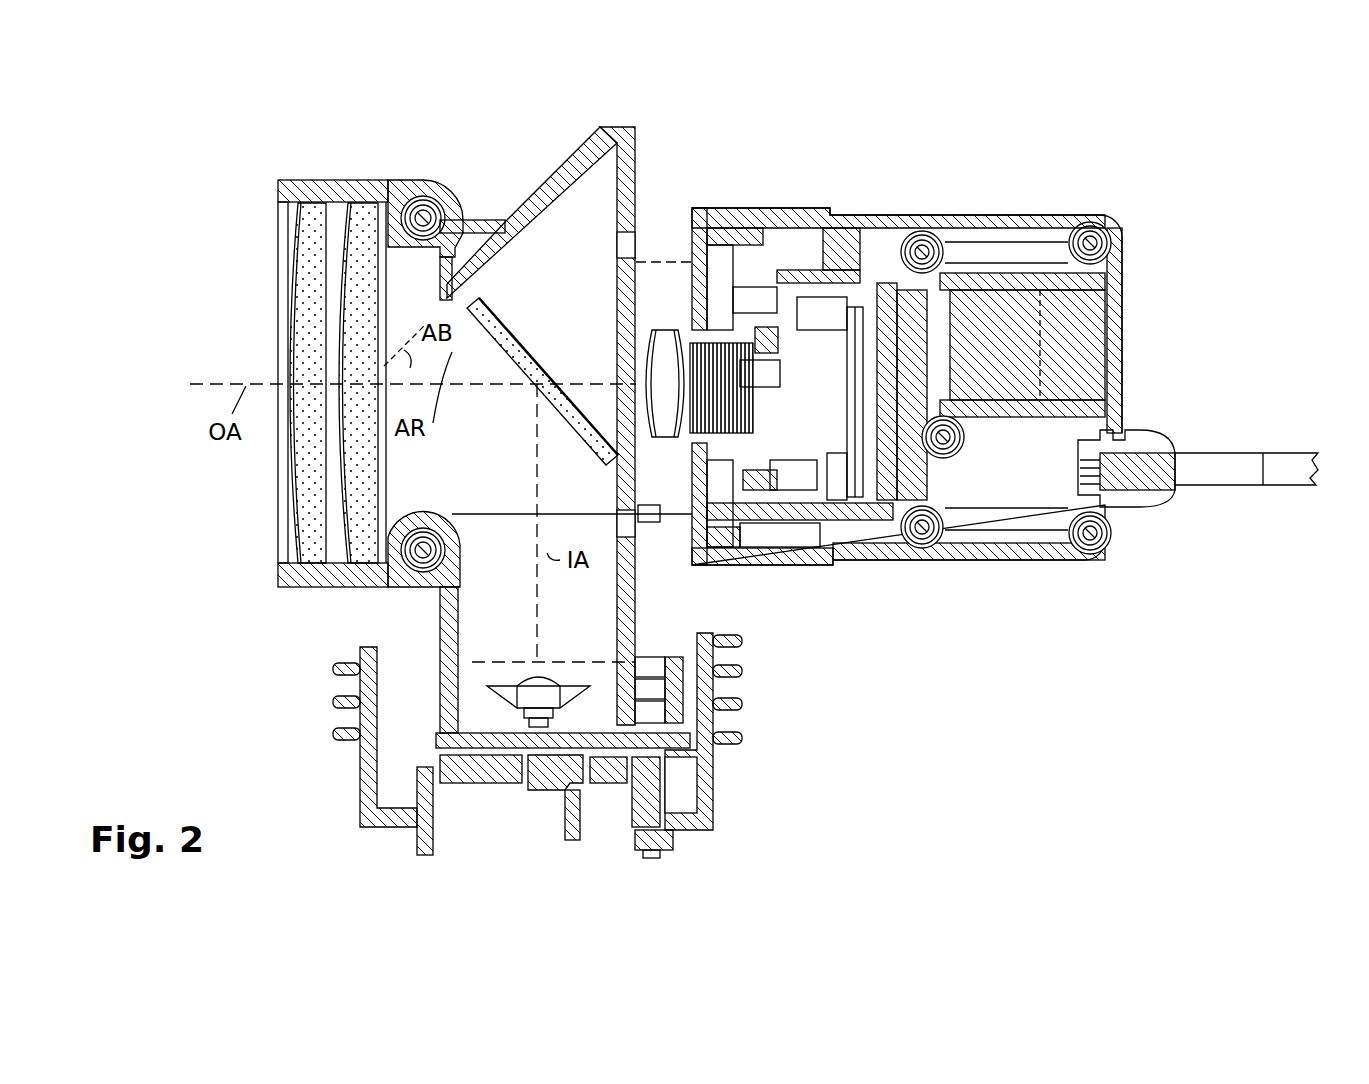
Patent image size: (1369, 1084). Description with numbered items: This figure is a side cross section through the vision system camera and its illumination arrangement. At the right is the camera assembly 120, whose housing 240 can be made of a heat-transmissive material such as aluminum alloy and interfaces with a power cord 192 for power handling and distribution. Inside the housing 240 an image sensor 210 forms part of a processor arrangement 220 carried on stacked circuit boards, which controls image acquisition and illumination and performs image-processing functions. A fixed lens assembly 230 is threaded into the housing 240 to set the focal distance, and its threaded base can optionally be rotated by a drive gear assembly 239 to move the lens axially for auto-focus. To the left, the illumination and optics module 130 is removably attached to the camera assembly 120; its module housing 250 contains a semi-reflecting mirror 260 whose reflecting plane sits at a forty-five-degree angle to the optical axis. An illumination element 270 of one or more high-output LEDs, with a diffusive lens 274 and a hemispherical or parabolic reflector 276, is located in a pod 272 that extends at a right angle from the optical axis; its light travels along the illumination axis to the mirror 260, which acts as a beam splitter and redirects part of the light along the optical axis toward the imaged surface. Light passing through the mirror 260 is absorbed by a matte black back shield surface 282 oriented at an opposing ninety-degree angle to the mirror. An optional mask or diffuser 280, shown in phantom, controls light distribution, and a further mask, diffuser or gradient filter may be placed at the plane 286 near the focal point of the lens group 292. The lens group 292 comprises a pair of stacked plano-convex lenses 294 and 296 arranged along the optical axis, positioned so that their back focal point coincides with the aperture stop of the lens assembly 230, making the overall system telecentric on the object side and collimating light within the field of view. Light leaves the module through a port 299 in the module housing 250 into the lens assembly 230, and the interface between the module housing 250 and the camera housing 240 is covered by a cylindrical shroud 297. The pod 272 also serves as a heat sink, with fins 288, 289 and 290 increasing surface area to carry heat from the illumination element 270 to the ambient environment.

The camera assembly 120 is at (910, 205).
The illumination and optics module 130 is at (563, 147).
The power cord 192 is at (1160, 437).
The image sensor 210 is at (847, 430).
The processor arrangement 220 is at (820, 270).
The fixed lens assembly 230 is at (663, 335).
The drive gear assembly 239 is at (773, 277).
The housing 240 is at (840, 215).
The module housing 250 is at (515, 203).
The semi-reflecting mirror 260 is at (490, 357).
The illumination element 270 is at (523, 703).
The pod 272 is at (607, 787).
The diffusive lens 274 is at (537, 683).
The reflector 276 is at (507, 707).
The mask and/or diffuser 280 is at (470, 655).
The matte black reflecting surface 282 is at (548, 212).
The plane 286 is at (503, 517).
The fins 288 is at (333, 735).
The fins 289 is at (423, 857).
The fins 290 is at (575, 837).
The lens group 292 is at (291, 484).
The lens 294 is at (307, 300).
The lens 296 is at (364, 366).
The cylindrical shroud 297 is at (650, 513).
The port 299 is at (617, 372).